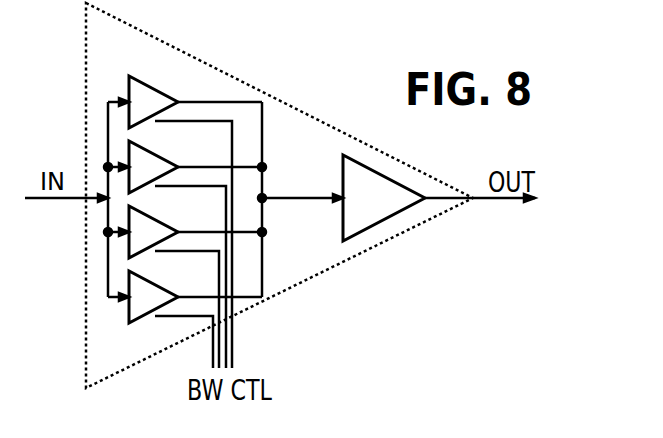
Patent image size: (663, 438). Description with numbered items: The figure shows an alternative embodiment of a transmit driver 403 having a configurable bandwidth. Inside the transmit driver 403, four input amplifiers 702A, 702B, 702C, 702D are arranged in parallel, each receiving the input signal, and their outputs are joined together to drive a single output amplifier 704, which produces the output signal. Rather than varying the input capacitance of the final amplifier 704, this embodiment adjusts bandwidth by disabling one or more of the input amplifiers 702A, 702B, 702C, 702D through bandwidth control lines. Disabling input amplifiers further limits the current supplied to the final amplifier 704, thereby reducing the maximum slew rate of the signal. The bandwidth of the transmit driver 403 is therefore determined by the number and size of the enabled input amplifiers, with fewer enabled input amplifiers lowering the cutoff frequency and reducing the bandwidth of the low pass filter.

The transmit driver 403 is at (86, 320).
The input amplifier 702A is at (158, 75).
The input amplifier 702B is at (158, 140).
The input amplifier 702C is at (158, 205).
The input amplifier 702D is at (158, 270).
The output amplifier 704 is at (343, 177).